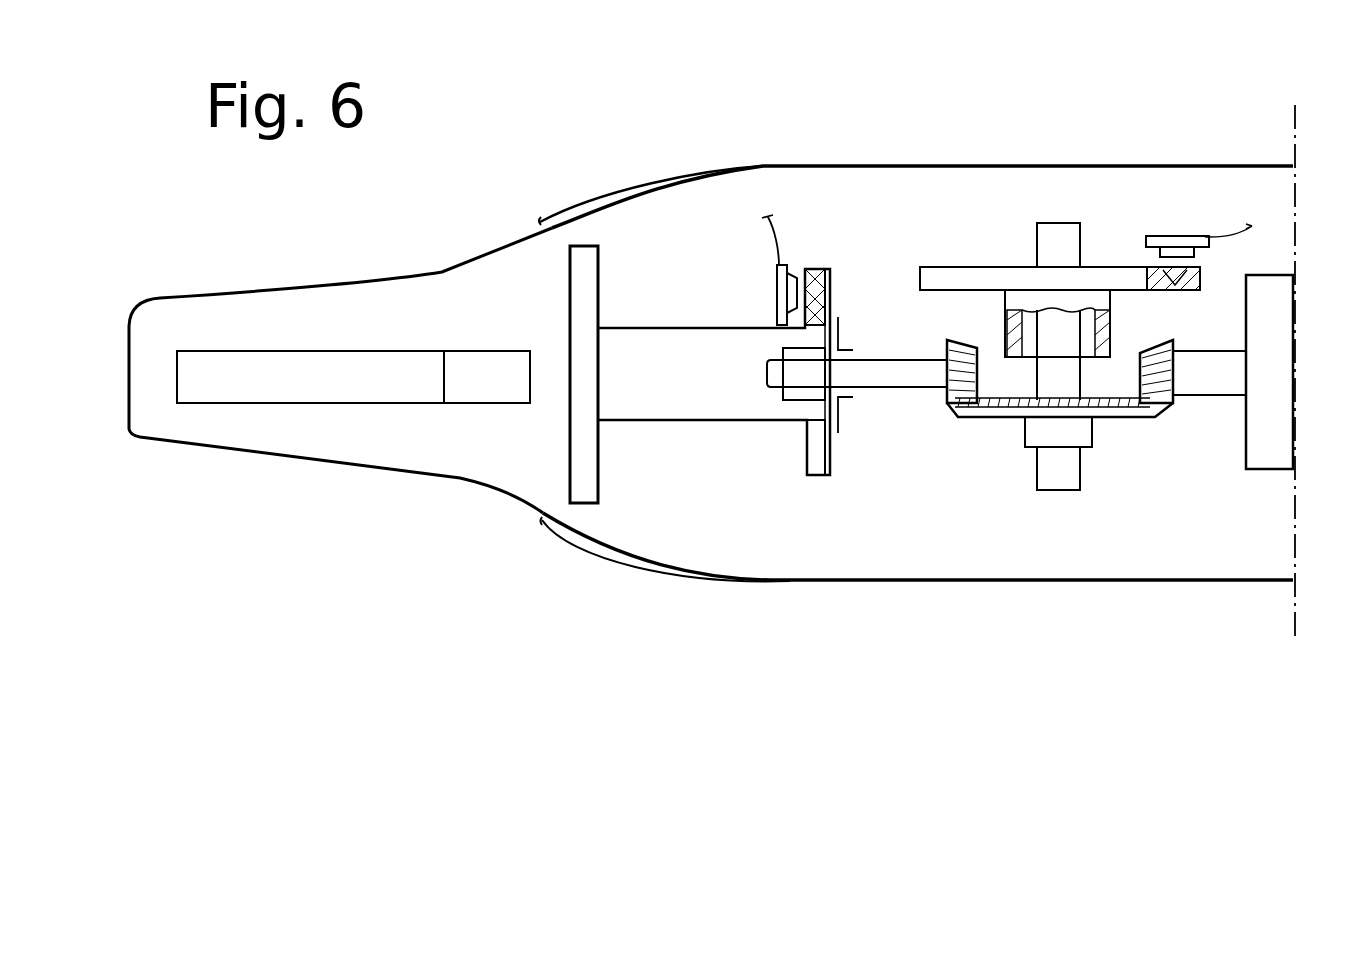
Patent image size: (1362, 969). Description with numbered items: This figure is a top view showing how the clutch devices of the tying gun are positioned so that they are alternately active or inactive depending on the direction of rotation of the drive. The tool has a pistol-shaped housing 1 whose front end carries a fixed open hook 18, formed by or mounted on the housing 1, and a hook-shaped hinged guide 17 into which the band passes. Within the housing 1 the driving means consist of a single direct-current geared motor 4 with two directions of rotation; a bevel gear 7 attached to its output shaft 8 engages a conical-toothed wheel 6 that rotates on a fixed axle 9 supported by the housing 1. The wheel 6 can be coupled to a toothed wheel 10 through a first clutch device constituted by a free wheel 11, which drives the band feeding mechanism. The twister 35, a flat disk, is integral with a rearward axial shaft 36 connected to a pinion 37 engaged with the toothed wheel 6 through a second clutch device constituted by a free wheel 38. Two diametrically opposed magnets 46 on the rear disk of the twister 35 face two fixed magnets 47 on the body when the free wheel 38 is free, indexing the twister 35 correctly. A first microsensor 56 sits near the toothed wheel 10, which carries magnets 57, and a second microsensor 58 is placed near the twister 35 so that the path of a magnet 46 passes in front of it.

The housing 1 is at (929, 173).
The geared motor 4 is at (1279, 456).
The conical-toothed wheel 6 is at (1013, 413).
The bevel gear 7 is at (1148, 415).
The output shaft 8 is at (1212, 386).
The fixed axle 9 is at (1065, 483).
The toothed wheel 10 is at (990, 273).
The free wheel 11 is at (1090, 325).
The hinged guide 17 is at (304, 360).
The fixed open hook 18 is at (231, 311).
The twister 35 is at (580, 277).
The axial shaft 36 is at (635, 345).
The pinion 37 is at (947, 407).
The free wheel 38 is at (792, 400).
The magnets 46 is at (817, 275).
The magnets 47 is at (812, 477).
The first microsensor 56 is at (1180, 240).
The magnets 57 is at (1176, 262).
The second microsensor 58 is at (793, 278).